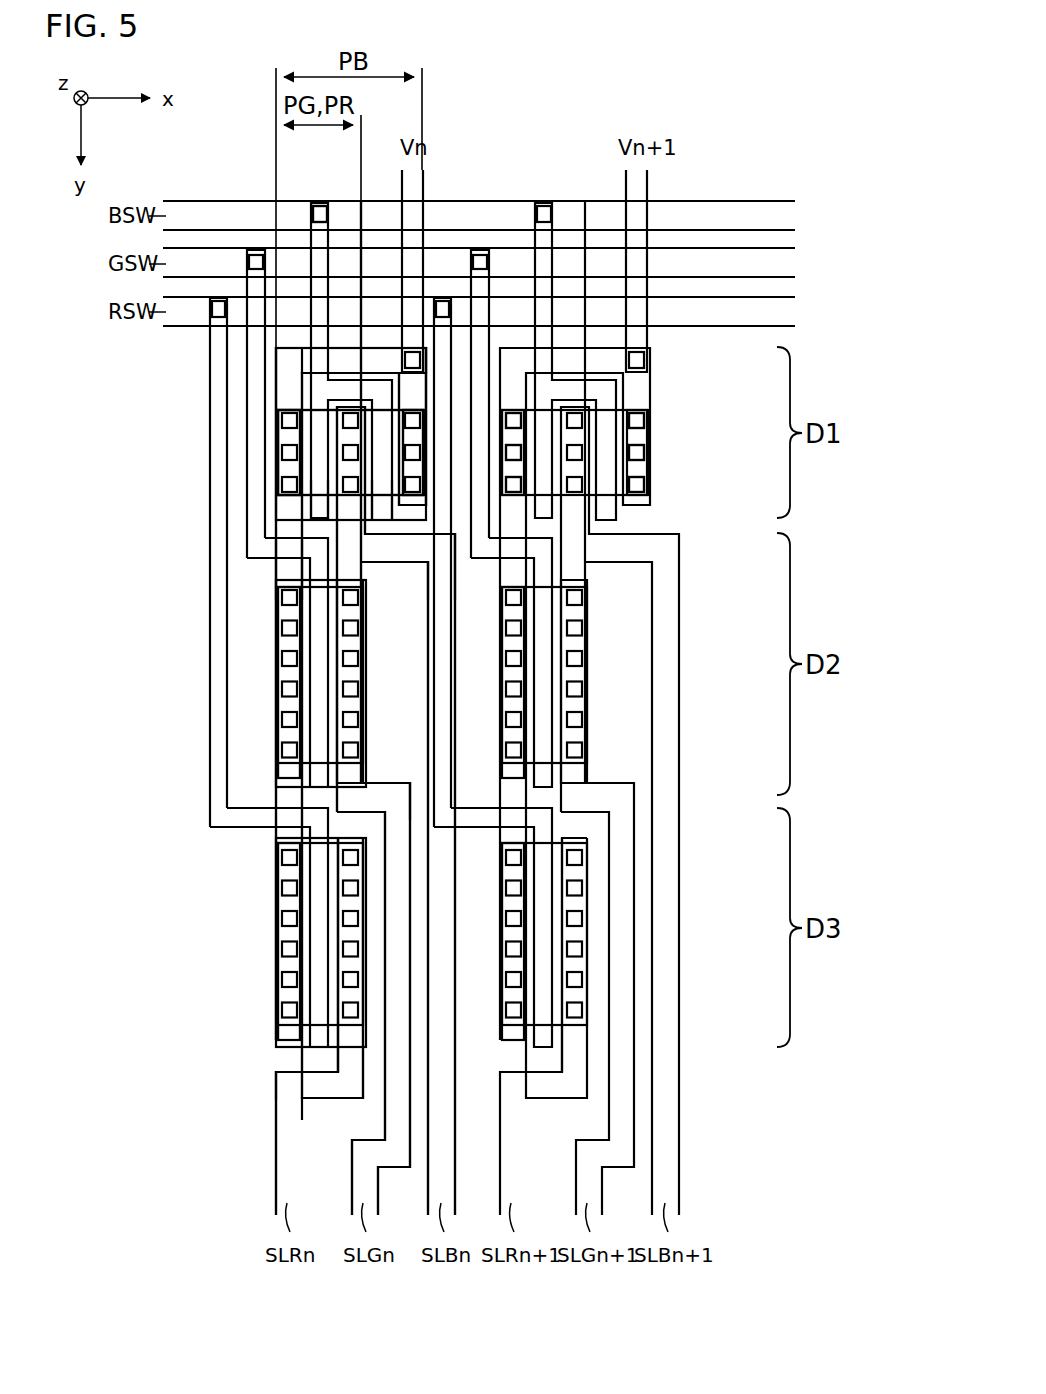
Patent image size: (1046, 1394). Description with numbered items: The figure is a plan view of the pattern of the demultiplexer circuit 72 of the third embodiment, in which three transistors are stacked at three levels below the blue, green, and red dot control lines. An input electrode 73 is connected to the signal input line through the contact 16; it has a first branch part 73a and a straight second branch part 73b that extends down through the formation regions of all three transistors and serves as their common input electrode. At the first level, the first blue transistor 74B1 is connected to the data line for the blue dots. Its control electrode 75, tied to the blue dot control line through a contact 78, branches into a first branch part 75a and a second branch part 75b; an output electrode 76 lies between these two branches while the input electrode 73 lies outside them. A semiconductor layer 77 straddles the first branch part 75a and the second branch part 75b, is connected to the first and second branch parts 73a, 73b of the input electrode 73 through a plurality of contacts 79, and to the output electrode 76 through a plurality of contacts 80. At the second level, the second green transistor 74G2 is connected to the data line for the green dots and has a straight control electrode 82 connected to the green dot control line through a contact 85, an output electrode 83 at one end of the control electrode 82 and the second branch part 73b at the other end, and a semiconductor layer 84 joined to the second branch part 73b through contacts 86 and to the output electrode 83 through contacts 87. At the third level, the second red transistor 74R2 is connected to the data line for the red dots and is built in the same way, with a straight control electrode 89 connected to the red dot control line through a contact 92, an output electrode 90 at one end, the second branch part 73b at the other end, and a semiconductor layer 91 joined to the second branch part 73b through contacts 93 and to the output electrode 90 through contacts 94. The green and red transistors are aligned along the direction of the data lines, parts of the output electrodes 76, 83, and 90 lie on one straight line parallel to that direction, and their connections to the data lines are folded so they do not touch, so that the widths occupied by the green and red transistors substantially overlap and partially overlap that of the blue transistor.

The demultiplexer circuit 72 is at (567, 120).
The contact 92 is at (218, 305).
The contact 85 is at (256, 262).
The contact 78 is at (320, 212).
The control electrode 75 is at (320, 267).
The contact 16 is at (412, 360).
The input electrode 73 is at (276, 362).
The first branch part 73a is at (410, 390).
The second branch part 73b is at (285, 570).
The semiconductor layer 77 is at (293, 408).
The contacts 79 is at (287, 452).
The contacts 80 is at (350, 485).
The first blue transistor 74B1 is at (256, 494).
The second branch part 75b is at (318, 505).
The first branch part 75a is at (382, 512).
The output electrode 76 is at (422, 547).
The contacts 86 is at (287, 627).
The control electrode 82 is at (320, 672).
The contacts 87 is at (350, 719).
The second green transistor 74G2 is at (256, 742).
The semiconductor layer 84 is at (297, 768).
The output electrode 83 is at (352, 780).
The contacts 93 is at (287, 887).
The control electrode 89 is at (320, 932).
The contacts 94 is at (350, 980).
The second red transistor 74R2 is at (256, 1007).
The semiconductor layer 91 is at (290, 1030).
The output electrode 90 is at (352, 1055).